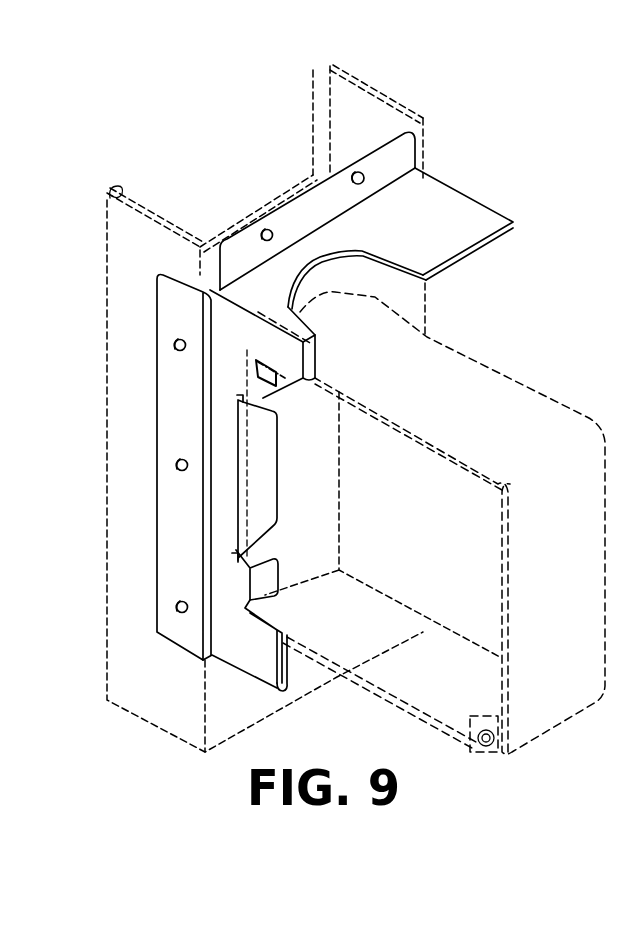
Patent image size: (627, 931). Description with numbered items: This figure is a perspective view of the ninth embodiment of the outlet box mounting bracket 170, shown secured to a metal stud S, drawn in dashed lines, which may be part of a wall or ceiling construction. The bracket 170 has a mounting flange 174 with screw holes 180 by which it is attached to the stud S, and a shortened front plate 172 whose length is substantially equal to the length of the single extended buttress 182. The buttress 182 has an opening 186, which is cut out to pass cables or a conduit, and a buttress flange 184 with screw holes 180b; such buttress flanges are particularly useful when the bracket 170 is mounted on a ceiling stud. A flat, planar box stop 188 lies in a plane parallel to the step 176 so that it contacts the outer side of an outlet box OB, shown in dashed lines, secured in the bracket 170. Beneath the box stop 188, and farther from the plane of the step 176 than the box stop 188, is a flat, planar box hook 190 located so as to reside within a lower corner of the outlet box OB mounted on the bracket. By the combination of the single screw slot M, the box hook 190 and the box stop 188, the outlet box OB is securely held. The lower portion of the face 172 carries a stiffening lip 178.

The mounting bracket 170 is at (300, 438).
The front plate 172 is at (285, 348).
The mounting flange 174 is at (128, 468).
The step 176 is at (215, 303).
The stiffening lip 178 is at (284, 678).
The screw holes 180 is at (178, 338).
The screw holes 180b is at (222, 206).
The buttress 182 is at (405, 251).
The buttress flange 184 is at (293, 209).
The opening 186 is at (358, 252).
The box stop 188 is at (262, 455).
The box hook 190 is at (272, 567).
The screw slot M is at (258, 356).
The outlet box OB is at (494, 371).
The metal stud S is at (106, 242).